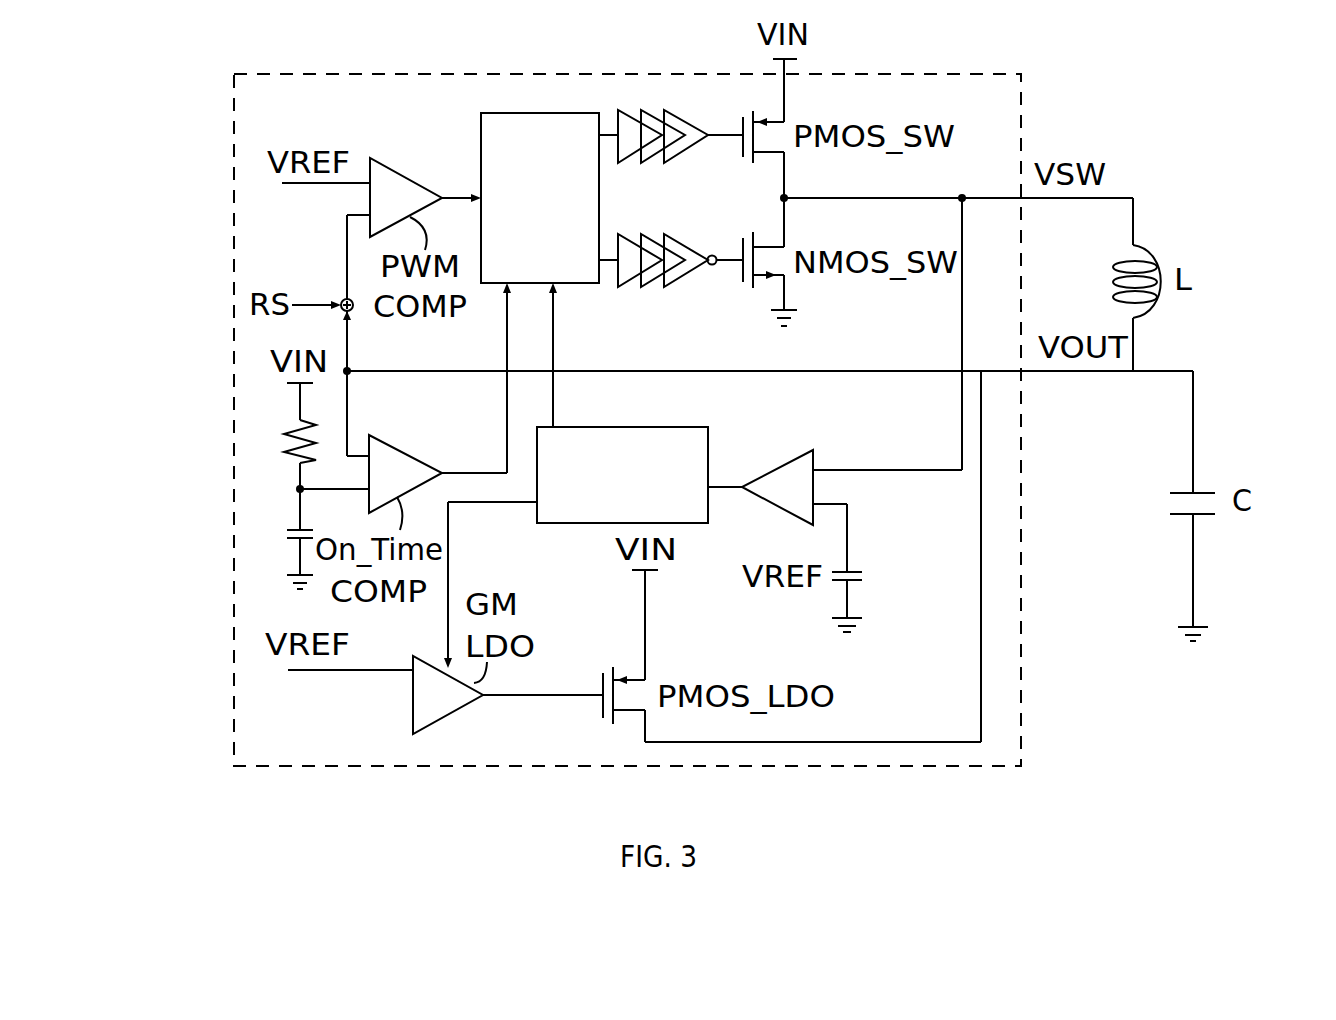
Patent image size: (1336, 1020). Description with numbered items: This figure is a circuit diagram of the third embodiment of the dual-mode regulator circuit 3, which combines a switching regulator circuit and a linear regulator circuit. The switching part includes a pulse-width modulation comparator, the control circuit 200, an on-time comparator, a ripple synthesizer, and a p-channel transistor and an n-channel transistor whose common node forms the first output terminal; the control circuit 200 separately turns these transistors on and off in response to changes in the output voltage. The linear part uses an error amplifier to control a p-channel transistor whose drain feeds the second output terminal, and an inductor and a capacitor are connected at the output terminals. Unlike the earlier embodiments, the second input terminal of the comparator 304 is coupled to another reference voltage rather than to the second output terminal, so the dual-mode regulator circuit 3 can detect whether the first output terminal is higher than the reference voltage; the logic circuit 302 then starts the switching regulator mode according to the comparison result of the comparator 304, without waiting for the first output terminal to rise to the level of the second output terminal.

The dual-mode regulator circuit 3 is at (233, 162).
The control circuit 200 is at (563, 253).
The logic circuit 302 is at (695, 510).
The comparator 304 is at (762, 475).